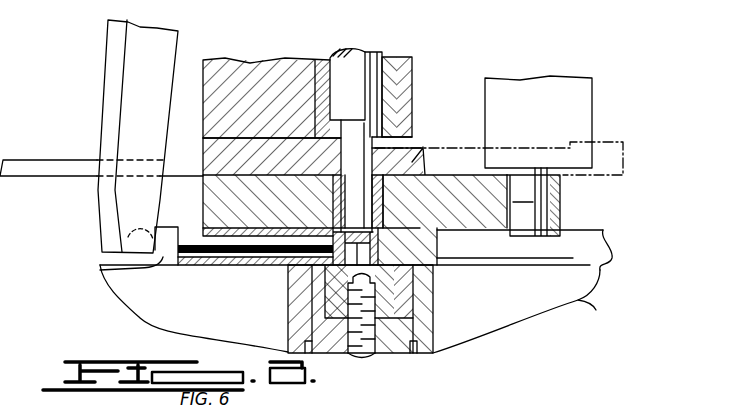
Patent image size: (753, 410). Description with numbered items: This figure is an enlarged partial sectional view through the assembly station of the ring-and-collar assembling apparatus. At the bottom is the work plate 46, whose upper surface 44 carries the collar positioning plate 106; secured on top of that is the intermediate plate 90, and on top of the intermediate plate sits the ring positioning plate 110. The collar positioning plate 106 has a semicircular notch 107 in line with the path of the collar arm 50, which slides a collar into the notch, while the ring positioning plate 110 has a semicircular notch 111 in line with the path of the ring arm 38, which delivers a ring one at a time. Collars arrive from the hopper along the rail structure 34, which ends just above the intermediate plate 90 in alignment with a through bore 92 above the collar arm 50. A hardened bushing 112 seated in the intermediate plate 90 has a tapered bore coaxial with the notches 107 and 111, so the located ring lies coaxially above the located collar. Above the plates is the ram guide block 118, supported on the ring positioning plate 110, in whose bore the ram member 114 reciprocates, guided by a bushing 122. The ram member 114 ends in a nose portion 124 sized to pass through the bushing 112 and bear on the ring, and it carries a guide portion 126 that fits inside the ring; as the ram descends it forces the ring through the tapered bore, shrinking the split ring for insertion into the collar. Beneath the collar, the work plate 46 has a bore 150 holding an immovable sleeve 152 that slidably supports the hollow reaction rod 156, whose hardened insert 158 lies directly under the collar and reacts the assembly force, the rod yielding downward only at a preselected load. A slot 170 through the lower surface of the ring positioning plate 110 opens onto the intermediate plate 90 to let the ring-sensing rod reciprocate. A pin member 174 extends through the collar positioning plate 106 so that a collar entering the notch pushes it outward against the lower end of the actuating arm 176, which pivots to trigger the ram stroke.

The actuating arm 176 is at (108, 83).
The slot 170 is at (184, 152).
The ram guide block 118 is at (252, 62).
The ring positioning plate 110 is at (203, 162).
The intermediate plate 90 is at (203, 202).
The semicircular notch 111 is at (347, 221).
The semicircular notch 107 is at (343, 145).
The ram member 114 is at (378, 55).
The bushing 122 is at (392, 83).
The nose portion 124 is at (365, 162).
The ring arm 38 is at (414, 161).
The rail structure 34 is at (578, 100).
The through bore 92 is at (537, 188).
The collar arm 50 is at (610, 230).
The hardened bushing 112 is at (430, 241).
The guide portion 126 is at (330, 255).
The collar positioning plate 106 is at (218, 258).
The pin member 174 is at (100, 272).
The plate 46 is at (133, 327).
The bore 150 is at (423, 318).
The hardened insert 158 is at (420, 282).
The reaction rod 156 is at (397, 355).
The sleeve 152 is at (428, 348).
The surface 44 is at (532, 311).